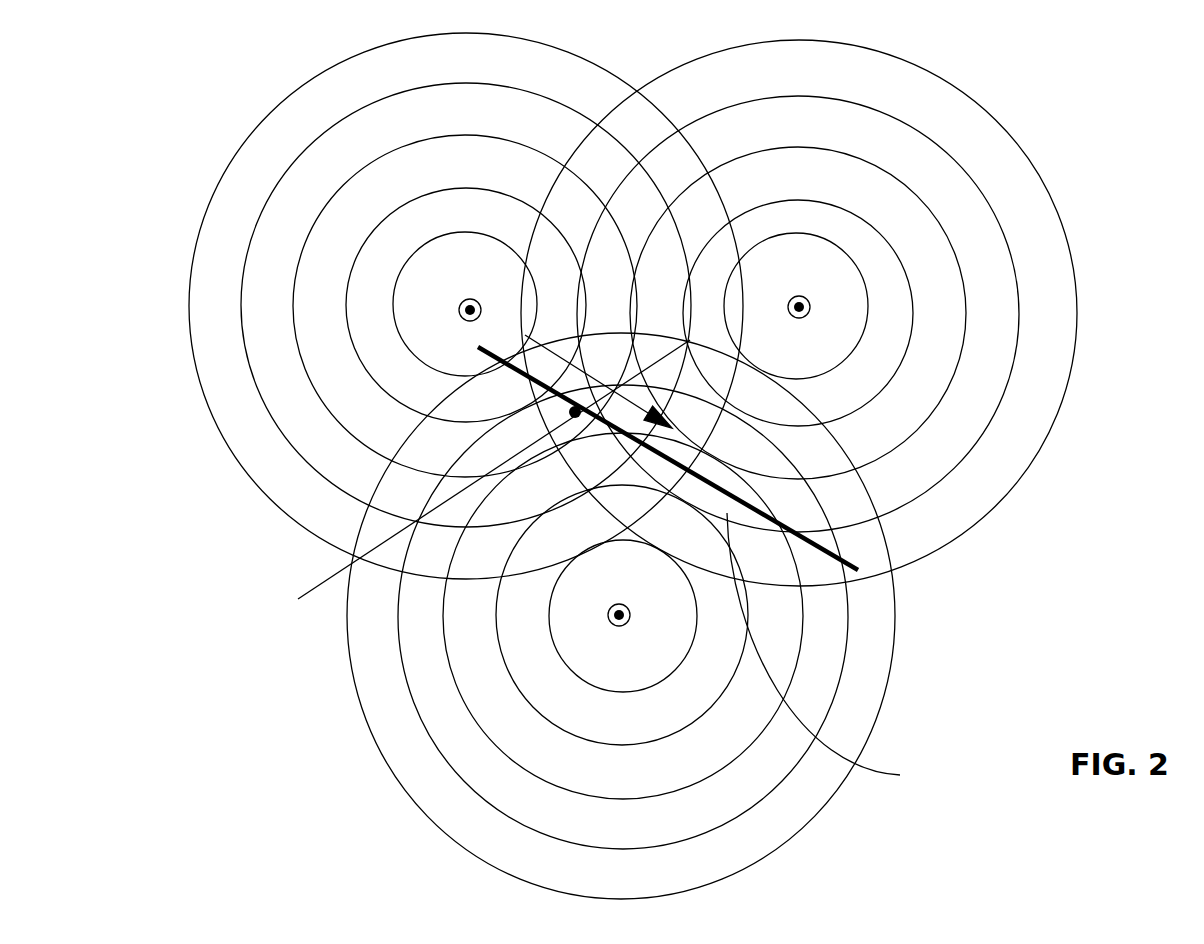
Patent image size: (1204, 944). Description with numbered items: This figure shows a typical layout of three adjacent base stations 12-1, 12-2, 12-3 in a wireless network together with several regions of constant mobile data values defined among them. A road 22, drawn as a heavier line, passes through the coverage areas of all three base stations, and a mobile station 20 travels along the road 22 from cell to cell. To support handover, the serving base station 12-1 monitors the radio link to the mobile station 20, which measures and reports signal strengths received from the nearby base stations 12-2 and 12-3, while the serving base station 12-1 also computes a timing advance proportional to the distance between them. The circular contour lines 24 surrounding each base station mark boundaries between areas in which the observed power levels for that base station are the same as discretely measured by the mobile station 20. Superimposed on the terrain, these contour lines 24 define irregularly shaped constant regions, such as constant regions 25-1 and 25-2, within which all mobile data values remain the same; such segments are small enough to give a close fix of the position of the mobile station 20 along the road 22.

The base station 12-1 is at (466, 306).
The base station 12-2 is at (799, 313).
The base station 12-3 is at (633, 616).
The mobile station 20 is at (556, 312).
The road 22 is at (837, 572).
The contour lines 24 is at (800, 833).
The constant region 25-1 is at (457, 484).
The constant segment 25-2 is at (840, 651).